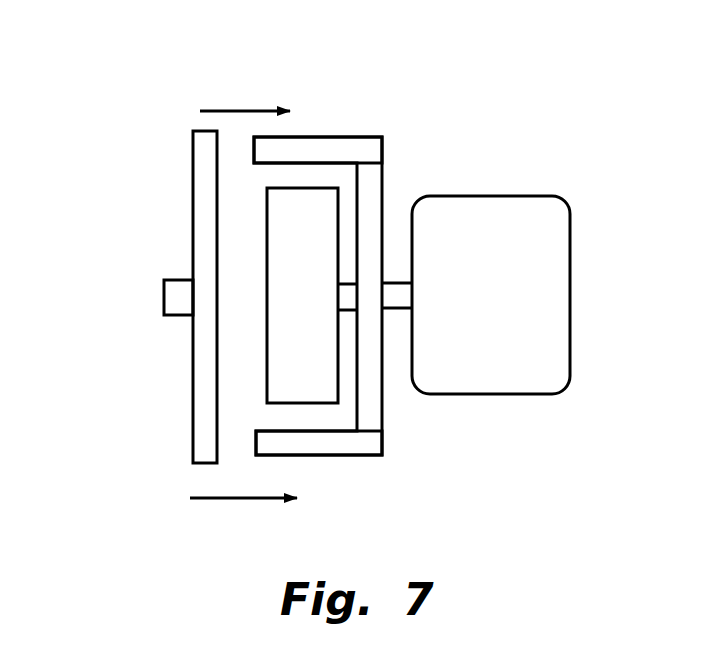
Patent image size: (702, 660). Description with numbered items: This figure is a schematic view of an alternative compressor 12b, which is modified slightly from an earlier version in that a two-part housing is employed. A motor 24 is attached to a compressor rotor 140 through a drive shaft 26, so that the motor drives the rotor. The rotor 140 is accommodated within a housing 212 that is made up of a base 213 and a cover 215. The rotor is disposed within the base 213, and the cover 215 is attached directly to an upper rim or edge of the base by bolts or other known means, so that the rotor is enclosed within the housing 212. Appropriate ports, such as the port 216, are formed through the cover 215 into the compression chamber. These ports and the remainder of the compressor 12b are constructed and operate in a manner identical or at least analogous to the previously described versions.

The compressor 12b is at (354, 119).
The base 213 is at (383, 163).
The housing 212 is at (340, 458).
The cover 215 is at (193, 170).
The port 216 is at (164, 297).
The compressor rotor 140 is at (267, 358).
The drive shaft 26 is at (398, 310).
The motor 24 is at (538, 196).